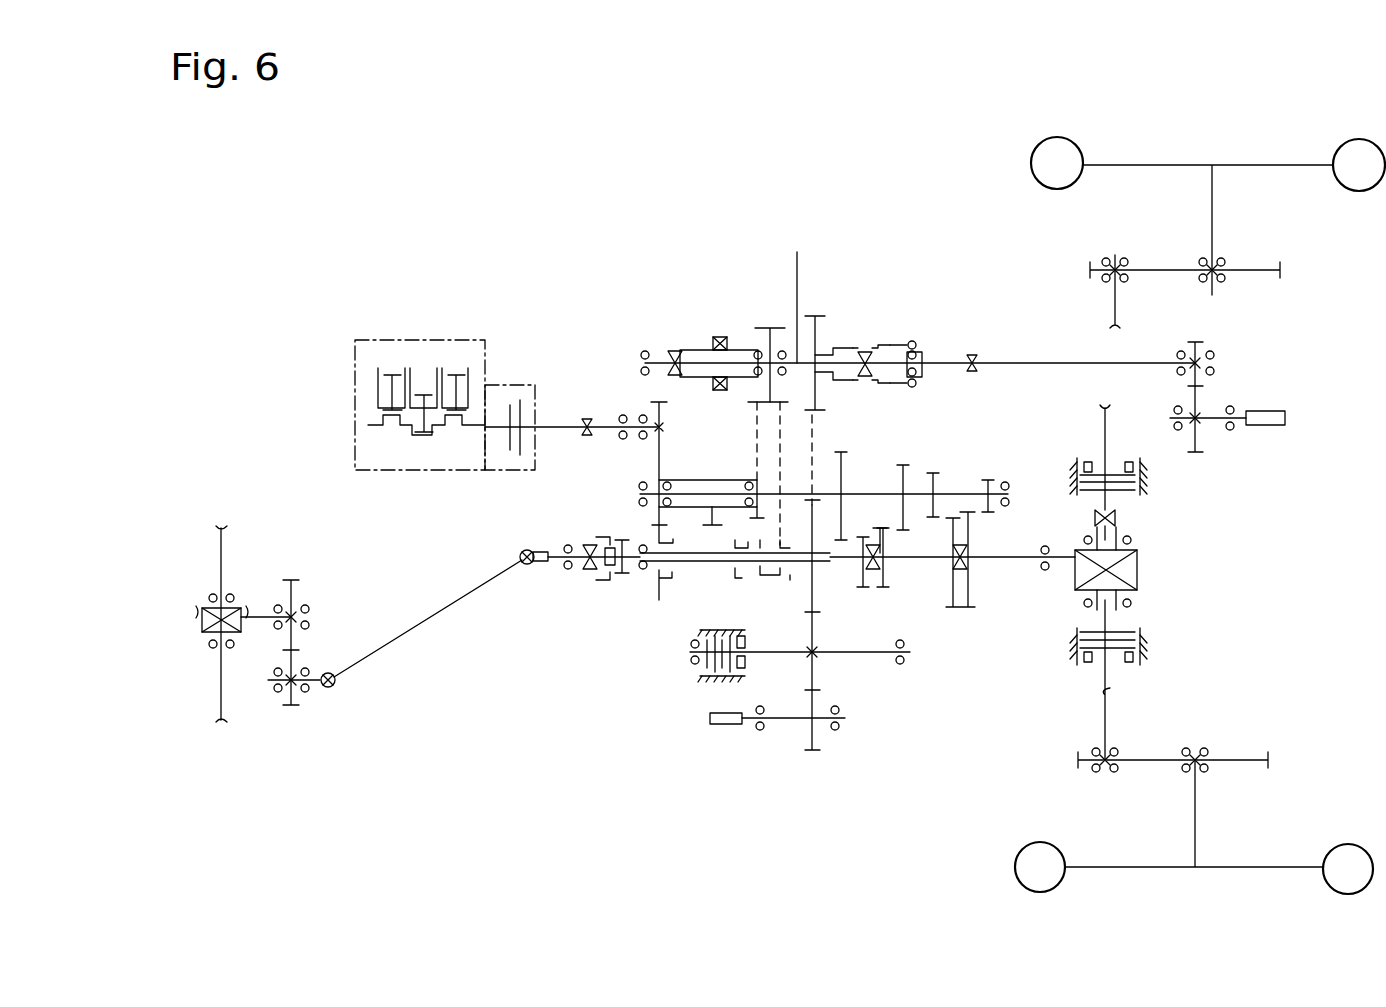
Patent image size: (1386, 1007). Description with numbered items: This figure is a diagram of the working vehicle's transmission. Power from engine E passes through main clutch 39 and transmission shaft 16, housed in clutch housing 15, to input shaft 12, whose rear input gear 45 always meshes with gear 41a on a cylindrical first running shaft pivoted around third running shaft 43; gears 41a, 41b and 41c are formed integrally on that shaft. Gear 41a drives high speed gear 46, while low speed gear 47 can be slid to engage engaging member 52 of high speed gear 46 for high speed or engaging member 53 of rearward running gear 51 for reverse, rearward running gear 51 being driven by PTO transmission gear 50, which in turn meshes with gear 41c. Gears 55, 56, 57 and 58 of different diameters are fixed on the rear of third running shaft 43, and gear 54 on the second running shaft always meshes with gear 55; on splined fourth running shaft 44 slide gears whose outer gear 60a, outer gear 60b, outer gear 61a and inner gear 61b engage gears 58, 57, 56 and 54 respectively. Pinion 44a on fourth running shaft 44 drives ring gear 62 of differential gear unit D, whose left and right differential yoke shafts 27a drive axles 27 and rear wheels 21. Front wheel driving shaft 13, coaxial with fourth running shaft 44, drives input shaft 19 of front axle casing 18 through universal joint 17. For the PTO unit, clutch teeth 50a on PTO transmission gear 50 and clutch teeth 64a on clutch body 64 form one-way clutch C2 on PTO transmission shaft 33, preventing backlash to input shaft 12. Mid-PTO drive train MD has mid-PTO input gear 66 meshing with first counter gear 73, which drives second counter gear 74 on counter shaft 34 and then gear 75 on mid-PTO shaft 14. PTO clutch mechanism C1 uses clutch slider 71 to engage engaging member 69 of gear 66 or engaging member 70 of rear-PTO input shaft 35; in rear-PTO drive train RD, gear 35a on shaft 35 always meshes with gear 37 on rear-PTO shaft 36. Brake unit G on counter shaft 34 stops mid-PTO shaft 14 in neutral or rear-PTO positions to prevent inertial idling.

The engine E is at (365, 340).
The clutch housing 15 is at (496, 385).
The main clutch 39 is at (505, 455).
The transmission shaft 16 is at (557, 427).
The input shaft 12 is at (600, 425).
The input gear 45 is at (662, 403).
The gear 41a is at (659, 457).
The gear 41b is at (720, 478).
The gear 41c is at (760, 478).
The low speed gear 47 is at (728, 538).
The third running shaft 43 is at (640, 494).
The rear-PTO input shaft 35 is at (962, 363).
The clutch body 64 is at (675, 350).
The one-way clutch C2 is at (727, 325).
The clutch teeth 64a is at (715, 337).
The PTO transmission gear 50 is at (770, 328).
The clutch teeth 50a is at (740, 347).
The PTO transmission shaft 33 is at (796, 292).
The mid-PTO input gear 66 is at (820, 318).
The engaging member 69 is at (826, 382).
The PTO clutch mechanism C1 is at (871, 318).
The clutch slider 71 is at (872, 338).
The engaging member 70 is at (910, 338).
The gear 37 is at (1198, 455).
The gear 35a is at (1198, 343).
The rear-PTO drive train RD is at (1252, 405).
The rear-PTO shaft 36 is at (1272, 426).
The differential yoke shafts 27a is at (1105, 420).
The ring gear 62 is at (1140, 552).
The differential gear unit D is at (1165, 596).
The rear wheels 21 is at (1031, 180).
The axles 27 is at (1213, 206).
The fourth running shaft 44 is at (636, 568).
The front wheel driving shaft 13 is at (536, 570).
The pinion 44a is at (1064, 565).
The high speed gear 46 is at (658, 596).
The engaging member 52 is at (672, 578).
The engaging member 53 is at (748, 582).
The rearward running gear 51 is at (780, 600).
The brake unit G is at (686, 700).
The counter shaft 34 is at (906, 665).
The first counter gear 73 is at (816, 612).
The second counter gear 74 is at (818, 678).
The gear 75 is at (818, 752).
The mid-PTO drive train MD is at (864, 716).
The mid-PTO shaft 14 is at (782, 725).
The gear 55 is at (846, 458).
The gear 56 is at (906, 462).
The gear 57 is at (934, 475).
The gear 58 is at (990, 478).
The gear 54 is at (872, 535).
The outer gear 61a is at (878, 590).
The inner gear 61b is at (862, 592).
The outer gear 60a is at (970, 608).
The outer gear 60b is at (957, 610).
The front axle casing 18 is at (245, 670).
The input shaft 19 is at (322, 690).
The universal joint 17 is at (340, 680).